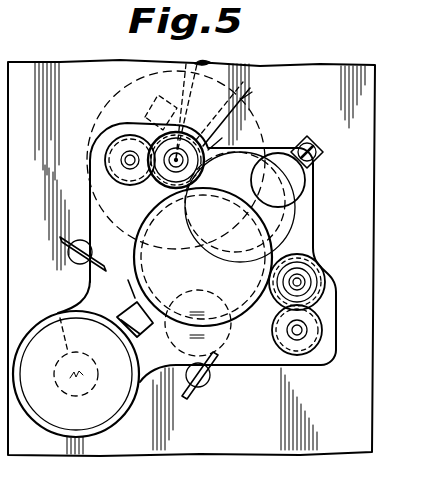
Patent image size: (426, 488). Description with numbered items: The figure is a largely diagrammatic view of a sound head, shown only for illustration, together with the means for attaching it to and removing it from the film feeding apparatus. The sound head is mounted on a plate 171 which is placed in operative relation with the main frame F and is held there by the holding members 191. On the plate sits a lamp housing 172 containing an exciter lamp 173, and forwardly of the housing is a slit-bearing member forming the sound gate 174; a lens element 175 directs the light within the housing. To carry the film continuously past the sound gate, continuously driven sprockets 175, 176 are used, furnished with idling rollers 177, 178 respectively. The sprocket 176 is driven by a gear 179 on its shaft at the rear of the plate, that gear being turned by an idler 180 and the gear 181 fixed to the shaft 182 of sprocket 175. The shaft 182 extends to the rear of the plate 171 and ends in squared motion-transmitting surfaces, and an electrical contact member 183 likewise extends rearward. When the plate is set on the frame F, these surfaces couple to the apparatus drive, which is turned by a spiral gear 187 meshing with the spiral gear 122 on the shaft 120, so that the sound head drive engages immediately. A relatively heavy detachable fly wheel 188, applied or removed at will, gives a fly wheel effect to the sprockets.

The main frame F is at (372, 100).
The shaft 120 is at (205, 60).
The spiral gear 122 is at (176, 148).
The plate 171 is at (303, 222).
The lamp housing 172 is at (103, 417).
The exciter lamp 173 is at (58, 311).
The sound gate 174 is at (141, 250).
The lens element; sprocket 175 is at (130, 306).
The sprocket 176 is at (302, 173).
The idling roller 177 is at (130, 160).
The idling roller 178 is at (323, 327).
The gear 179 is at (326, 247).
The idler 180 is at (303, 203).
The gear 181 is at (250, 133).
The shaft 182 is at (176, 158).
The electrical contact member 183 is at (220, 346).
The spiral gear 187 is at (244, 93).
The fly wheel 188 is at (165, 70).
The holding members 191 is at (322, 152).